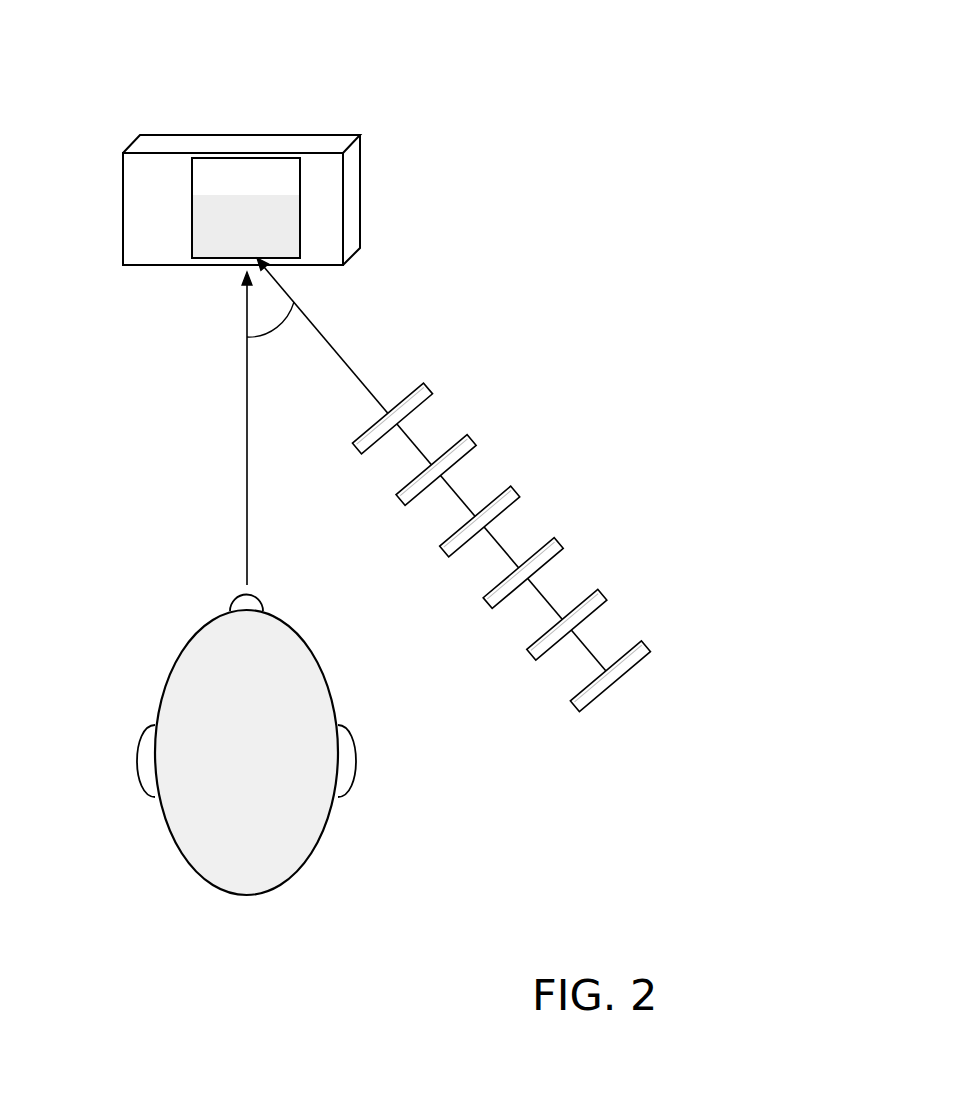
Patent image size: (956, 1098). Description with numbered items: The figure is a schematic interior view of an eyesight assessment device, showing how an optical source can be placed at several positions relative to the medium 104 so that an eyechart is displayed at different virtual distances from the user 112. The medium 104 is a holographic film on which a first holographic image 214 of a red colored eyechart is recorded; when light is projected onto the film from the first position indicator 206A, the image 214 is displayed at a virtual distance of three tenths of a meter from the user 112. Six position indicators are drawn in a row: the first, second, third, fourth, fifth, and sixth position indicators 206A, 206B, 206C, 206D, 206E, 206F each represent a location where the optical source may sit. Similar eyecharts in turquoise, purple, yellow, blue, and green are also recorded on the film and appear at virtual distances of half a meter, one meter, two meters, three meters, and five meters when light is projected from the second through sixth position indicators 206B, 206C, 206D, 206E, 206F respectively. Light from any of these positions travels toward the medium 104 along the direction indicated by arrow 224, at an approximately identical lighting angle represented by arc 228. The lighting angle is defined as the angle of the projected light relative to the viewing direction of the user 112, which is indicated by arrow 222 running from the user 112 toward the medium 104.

The medium 104 is at (252, 132).
The first holographic image 214 is at (191, 200).
The arrow indicating viewing direction 222 is at (247, 393).
The arrow indicating light direction 224 is at (339, 351).
The arc representing lighting angle 228 is at (262, 336).
The first position indicator 206A is at (646, 647).
The second position indicator 206B is at (532, 655).
The third position indicator 206C is at (559, 543).
The fourth position indicator 206D is at (444, 552).
The fifth position indicator 206E is at (473, 440).
The sixth position indicator 206F is at (357, 447).
The user 112 is at (303, 865).